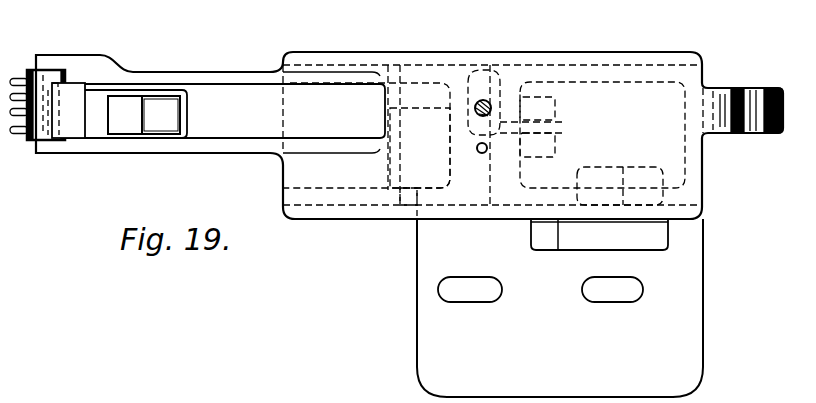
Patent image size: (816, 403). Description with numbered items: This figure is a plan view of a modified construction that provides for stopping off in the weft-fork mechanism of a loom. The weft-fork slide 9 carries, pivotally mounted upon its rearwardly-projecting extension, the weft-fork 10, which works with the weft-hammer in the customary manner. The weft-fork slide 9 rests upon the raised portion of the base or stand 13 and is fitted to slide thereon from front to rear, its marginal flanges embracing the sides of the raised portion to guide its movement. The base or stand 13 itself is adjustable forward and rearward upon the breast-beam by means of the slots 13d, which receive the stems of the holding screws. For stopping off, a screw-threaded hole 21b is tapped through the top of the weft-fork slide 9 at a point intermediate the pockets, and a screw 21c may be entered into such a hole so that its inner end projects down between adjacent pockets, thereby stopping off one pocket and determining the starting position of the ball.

The weft-fork slide 9 is at (540, 52).
The weft-fork 10 is at (17, 142).
The base or stand 13 is at (437, 252).
The slots 13d is at (626, 300).
The screw-threaded hole 21b is at (477, 149).
The screw 21c is at (483, 99).